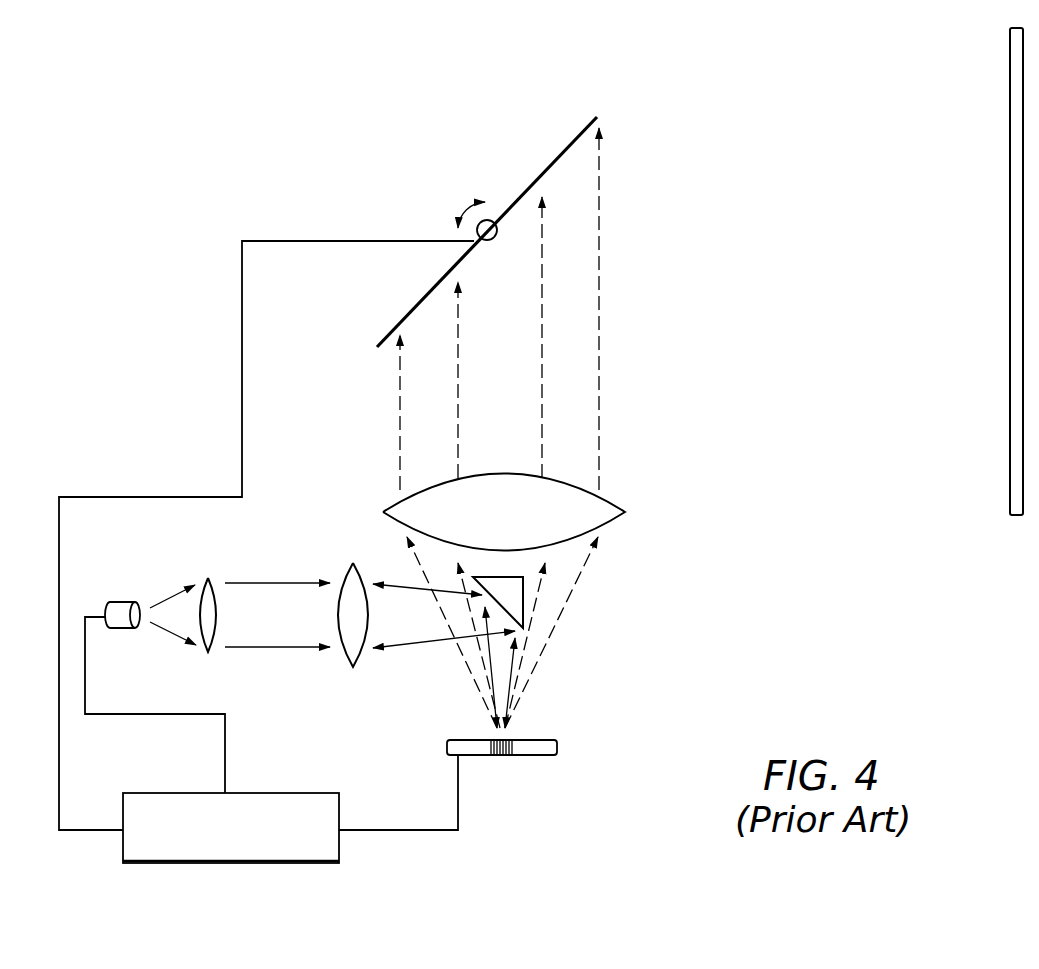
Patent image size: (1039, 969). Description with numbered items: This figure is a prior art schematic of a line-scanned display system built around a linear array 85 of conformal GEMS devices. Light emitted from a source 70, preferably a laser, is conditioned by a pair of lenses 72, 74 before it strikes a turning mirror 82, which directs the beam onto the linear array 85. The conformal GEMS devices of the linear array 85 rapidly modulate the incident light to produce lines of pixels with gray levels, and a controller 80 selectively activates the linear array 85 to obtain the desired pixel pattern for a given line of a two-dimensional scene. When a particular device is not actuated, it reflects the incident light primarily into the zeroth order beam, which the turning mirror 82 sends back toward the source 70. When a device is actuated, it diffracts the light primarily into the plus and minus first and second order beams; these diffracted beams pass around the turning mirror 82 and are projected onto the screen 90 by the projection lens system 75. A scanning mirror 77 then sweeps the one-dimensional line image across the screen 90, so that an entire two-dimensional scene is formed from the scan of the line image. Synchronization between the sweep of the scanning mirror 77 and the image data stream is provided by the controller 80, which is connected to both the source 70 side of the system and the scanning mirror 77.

The source 70 is at (122, 600).
The lens 72 is at (207, 576).
The lens 74 is at (340, 570).
The projection lens system 75 is at (403, 502).
The scanning mirror 77 is at (546, 170).
The controller 80 is at (340, 804).
The turning mirror 82 is at (525, 590).
The linear array 85 is at (533, 756).
The screen 90 is at (1010, 462).